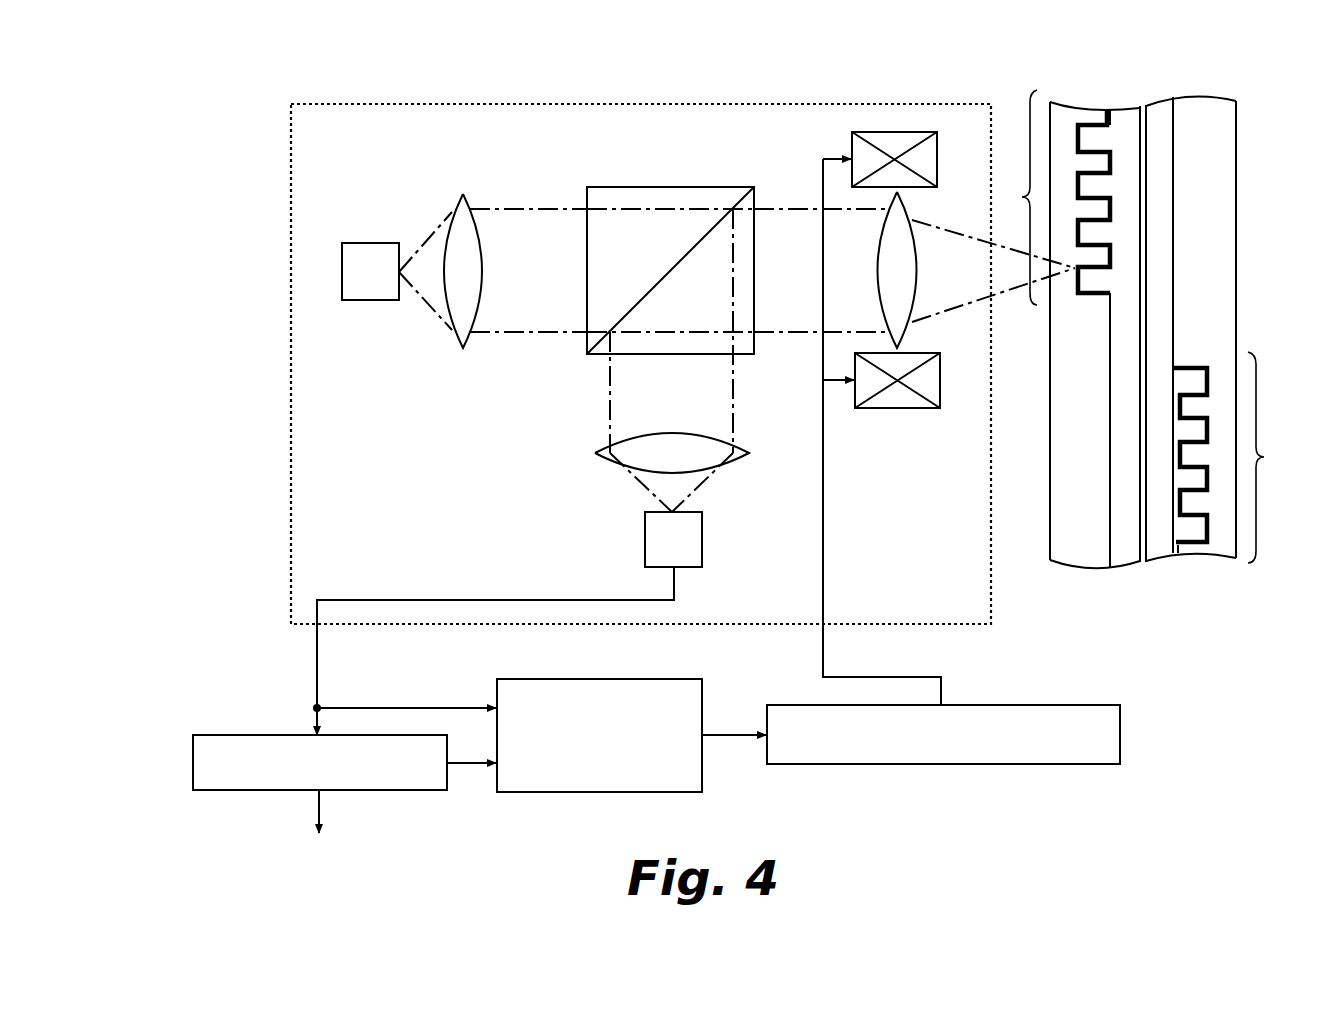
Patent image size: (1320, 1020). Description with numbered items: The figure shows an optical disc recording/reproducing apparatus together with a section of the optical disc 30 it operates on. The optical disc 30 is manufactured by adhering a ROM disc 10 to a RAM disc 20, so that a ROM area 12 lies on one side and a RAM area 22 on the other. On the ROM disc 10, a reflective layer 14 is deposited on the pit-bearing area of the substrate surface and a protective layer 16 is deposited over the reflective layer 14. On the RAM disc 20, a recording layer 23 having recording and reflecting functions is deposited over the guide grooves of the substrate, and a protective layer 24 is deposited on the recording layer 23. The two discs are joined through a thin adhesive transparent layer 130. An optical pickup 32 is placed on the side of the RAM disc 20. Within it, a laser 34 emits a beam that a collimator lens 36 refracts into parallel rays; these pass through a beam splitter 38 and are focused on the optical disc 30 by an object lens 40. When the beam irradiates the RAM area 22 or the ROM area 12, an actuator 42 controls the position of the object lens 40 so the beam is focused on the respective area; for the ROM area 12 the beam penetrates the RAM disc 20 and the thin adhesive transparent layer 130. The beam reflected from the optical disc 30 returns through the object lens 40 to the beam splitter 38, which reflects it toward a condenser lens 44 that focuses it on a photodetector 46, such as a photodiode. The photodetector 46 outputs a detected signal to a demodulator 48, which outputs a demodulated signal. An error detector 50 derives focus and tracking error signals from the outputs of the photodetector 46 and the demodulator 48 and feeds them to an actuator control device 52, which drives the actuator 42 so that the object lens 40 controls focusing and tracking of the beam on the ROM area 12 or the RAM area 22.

The ROM disc 10 is at (1222, 560).
The ROM area 12 is at (1236, 457).
The reflective layer 14 is at (1181, 558).
The protective layer 16 is at (1158, 550).
The RAM disc 20 is at (1087, 108).
The RAM area 22 is at (1054, 197).
The recording layer 23 is at (1113, 112).
The protective layer 24 is at (1140, 108).
The thin adhesive transparent layer 130 is at (1150, 104).
The optical disc 30 is at (1169, 677).
The optical pickup 32 is at (376, 44).
The laser 34 is at (365, 242).
The collimator lens 36 is at (452, 212).
The beam splitter 38 is at (655, 187).
The object lens 40 is at (910, 226).
The actuator 42 is at (875, 126).
The condenser lens 44 is at (630, 440).
The photodetector 46 is at (702, 533).
The demodulator 48 is at (395, 790).
The error detector 50 is at (680, 679).
The actuator control device 52 is at (1042, 764).